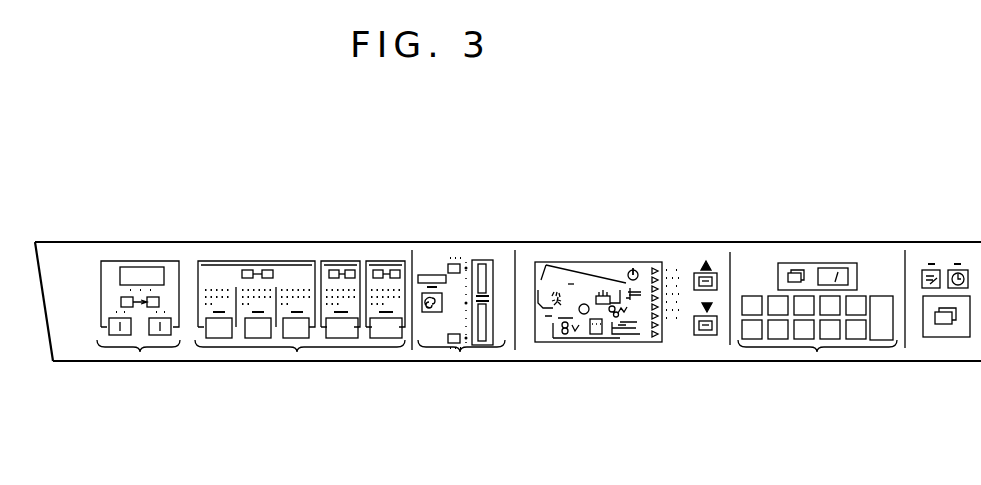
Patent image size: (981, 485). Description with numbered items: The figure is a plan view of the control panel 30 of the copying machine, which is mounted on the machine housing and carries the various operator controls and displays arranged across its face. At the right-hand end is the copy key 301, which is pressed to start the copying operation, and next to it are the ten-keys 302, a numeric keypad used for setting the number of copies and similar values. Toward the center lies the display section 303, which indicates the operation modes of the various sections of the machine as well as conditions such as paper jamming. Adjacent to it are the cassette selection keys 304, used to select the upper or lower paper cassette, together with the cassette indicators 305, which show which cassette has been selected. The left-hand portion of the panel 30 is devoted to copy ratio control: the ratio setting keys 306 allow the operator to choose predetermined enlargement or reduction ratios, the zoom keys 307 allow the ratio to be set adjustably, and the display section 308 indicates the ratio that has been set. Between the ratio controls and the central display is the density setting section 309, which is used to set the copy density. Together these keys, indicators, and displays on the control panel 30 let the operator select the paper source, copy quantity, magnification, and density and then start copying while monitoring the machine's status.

The control panel 30 is at (511, 241).
The copy key 301 is at (946, 338).
The ten-keys 302 is at (817, 352).
The display section 303 is at (596, 343).
The cassette selection keys 304 is at (694, 282).
The cassette indicators 305 is at (708, 304).
The ratio setting keys 306 is at (297, 352).
The zoom keys 307 is at (140, 352).
The display section 308 is at (143, 262).
The density setting section 309 is at (460, 352).